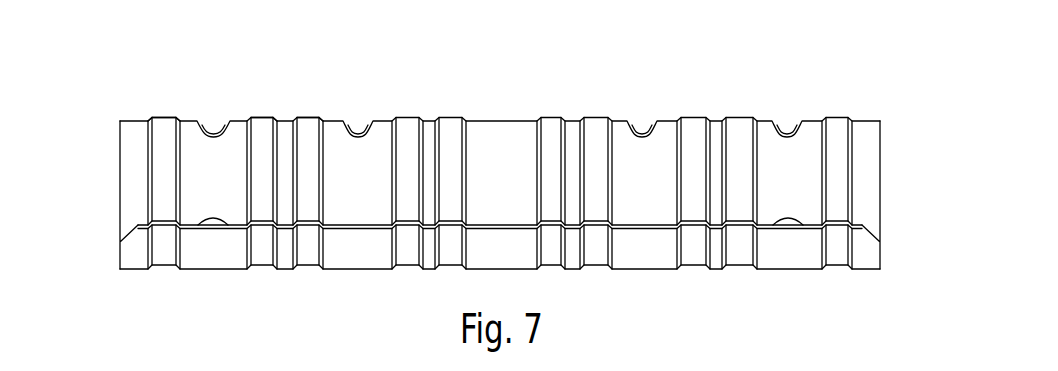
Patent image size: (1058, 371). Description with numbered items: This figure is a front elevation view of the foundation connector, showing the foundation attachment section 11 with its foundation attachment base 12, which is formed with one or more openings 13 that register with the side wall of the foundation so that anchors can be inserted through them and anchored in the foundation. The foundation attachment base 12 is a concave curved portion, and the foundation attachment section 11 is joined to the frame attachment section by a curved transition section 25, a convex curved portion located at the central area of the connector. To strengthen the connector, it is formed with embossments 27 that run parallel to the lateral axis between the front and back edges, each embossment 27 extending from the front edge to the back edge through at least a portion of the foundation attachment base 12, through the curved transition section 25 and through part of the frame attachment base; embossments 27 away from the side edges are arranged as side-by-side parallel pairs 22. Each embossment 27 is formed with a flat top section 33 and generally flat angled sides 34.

The foundation attachment section 11 is at (891, 216).
The foundation attachment base 12 is at (867, 257).
The openings 13 is at (215, 222).
The rib pair 22 is at (593, 135).
The curved transition section 25 is at (868, 120).
The embossments 27 is at (163, 176).
The flat top sections 33 is at (163, 115).
The flat angled sides 34 is at (148, 117).